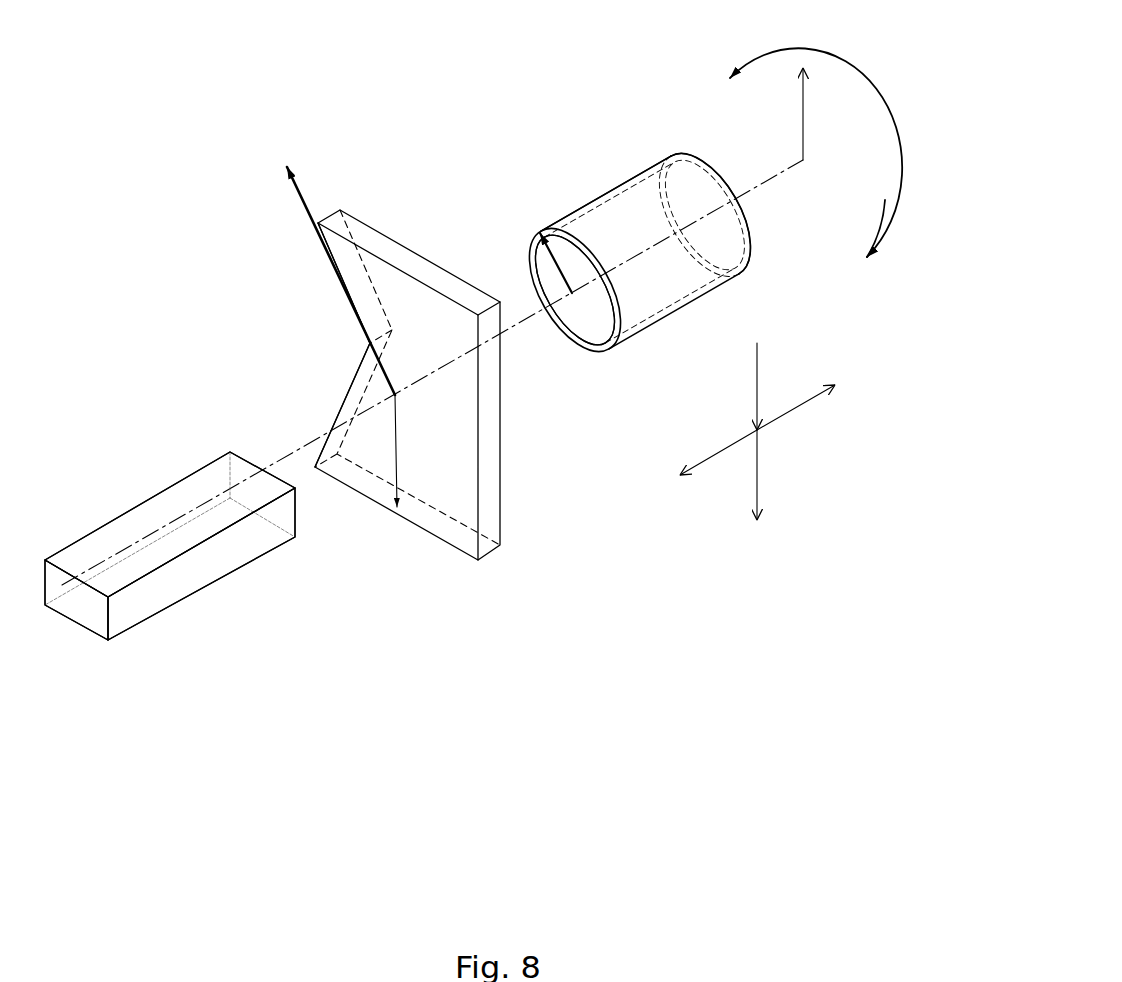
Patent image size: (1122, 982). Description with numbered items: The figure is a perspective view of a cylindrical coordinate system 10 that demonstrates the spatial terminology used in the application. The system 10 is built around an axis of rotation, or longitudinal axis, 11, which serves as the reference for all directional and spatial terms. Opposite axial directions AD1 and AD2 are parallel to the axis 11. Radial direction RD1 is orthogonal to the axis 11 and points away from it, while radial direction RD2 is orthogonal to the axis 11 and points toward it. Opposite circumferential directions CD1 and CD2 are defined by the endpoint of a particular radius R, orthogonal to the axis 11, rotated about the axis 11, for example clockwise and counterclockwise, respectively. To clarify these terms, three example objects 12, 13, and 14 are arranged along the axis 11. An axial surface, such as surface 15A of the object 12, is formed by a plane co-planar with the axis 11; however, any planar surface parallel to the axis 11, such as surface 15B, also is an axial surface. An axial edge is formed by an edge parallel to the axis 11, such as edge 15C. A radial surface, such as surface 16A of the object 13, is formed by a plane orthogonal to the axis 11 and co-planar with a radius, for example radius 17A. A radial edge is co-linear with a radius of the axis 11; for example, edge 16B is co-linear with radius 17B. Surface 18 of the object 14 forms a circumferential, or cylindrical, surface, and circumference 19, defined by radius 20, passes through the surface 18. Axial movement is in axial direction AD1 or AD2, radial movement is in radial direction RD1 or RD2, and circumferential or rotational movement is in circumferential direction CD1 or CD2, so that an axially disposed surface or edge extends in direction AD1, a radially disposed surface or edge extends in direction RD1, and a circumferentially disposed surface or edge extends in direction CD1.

The cylindrical coordinate system 10 is at (267, 298).
The axis of rotation 11 is at (740, 196).
The object 12 is at (135, 628).
The object 13 is at (510, 548).
The object 14 is at (663, 322).
The axial surface 15A is at (133, 525).
The axial surface 15B is at (187, 582).
The axial edge 15C is at (162, 493).
The radial surface 16A is at (403, 293).
The radial edge 16B is at (352, 283).
The radius 17A is at (397, 443).
The radius 17B is at (300, 198).
The circumferential surface 18 is at (610, 192).
The circumference 19 is at (527, 248).
The radius 20 is at (538, 238).
The radius R is at (803, 108).
The circumferential direction CD1 is at (887, 212).
The circumferential direction CD2 is at (760, 52).
The radial direction RD1 is at (757, 485).
The radial direction RD2 is at (758, 362).
The axial direction AD1 is at (787, 408).
The axial direction AD2 is at (718, 452).